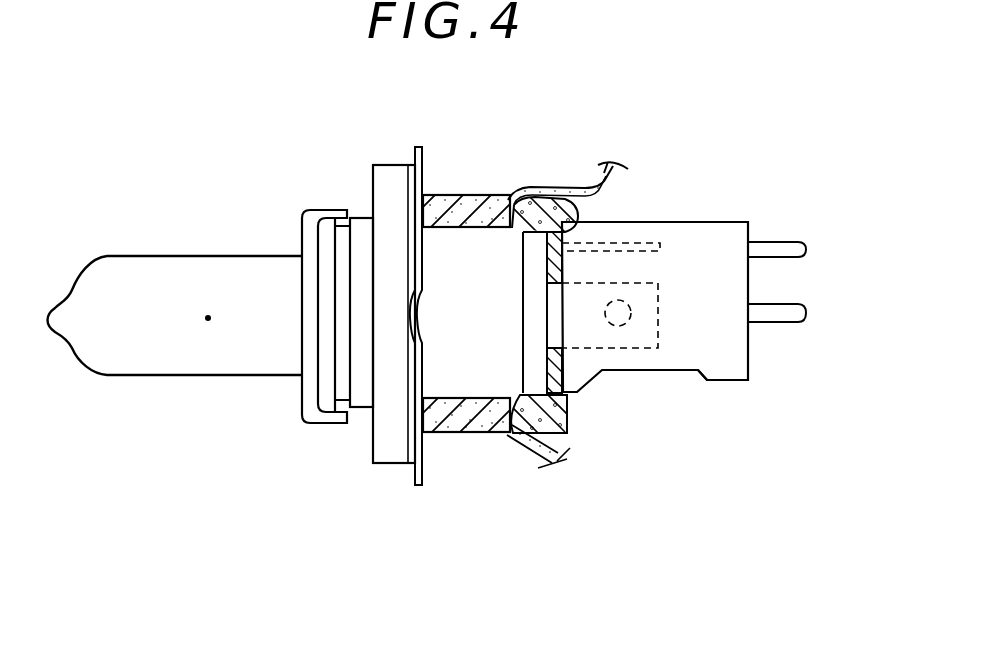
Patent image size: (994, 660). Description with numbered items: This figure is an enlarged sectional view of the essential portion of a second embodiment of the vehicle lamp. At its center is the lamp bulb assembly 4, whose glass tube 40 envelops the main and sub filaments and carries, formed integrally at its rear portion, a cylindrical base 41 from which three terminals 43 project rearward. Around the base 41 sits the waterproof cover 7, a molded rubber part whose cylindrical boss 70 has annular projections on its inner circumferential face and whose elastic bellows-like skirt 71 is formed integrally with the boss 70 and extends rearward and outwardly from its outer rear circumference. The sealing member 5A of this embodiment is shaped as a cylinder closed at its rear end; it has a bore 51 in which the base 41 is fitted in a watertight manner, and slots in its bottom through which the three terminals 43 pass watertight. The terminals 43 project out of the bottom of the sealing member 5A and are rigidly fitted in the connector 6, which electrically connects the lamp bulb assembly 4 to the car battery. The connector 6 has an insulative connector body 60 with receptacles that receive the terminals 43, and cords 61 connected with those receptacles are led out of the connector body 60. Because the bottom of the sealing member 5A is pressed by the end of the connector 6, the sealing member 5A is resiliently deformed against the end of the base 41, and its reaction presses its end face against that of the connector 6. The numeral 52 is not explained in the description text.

The lamp bulb assembly 4 is at (140, 253).
The glass tube 40 is at (113, 378).
The cylindrical base 41 is at (468, 382).
The waterproof cover 7 is at (495, 190).
The cylindrical boss 70 is at (463, 197).
The sealing member 5A is at (553, 190).
The elastic bellows-like skirt 71 is at (595, 183).
The bore 51 is at (570, 400).
The retaining members 52 is at (562, 270).
The connector 6 is at (743, 217).
The terminals 43 is at (661, 283).
The connector body 60 is at (730, 382).
The cords 61 is at (772, 260).